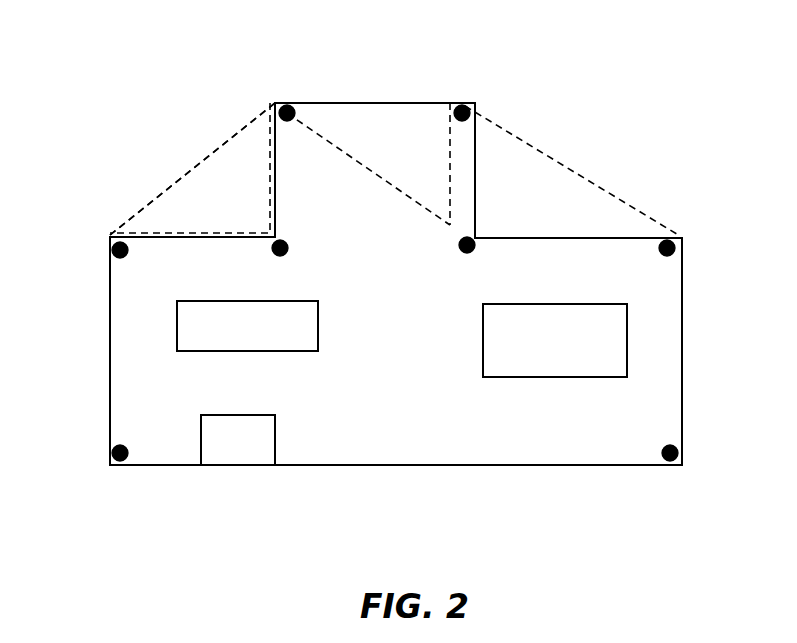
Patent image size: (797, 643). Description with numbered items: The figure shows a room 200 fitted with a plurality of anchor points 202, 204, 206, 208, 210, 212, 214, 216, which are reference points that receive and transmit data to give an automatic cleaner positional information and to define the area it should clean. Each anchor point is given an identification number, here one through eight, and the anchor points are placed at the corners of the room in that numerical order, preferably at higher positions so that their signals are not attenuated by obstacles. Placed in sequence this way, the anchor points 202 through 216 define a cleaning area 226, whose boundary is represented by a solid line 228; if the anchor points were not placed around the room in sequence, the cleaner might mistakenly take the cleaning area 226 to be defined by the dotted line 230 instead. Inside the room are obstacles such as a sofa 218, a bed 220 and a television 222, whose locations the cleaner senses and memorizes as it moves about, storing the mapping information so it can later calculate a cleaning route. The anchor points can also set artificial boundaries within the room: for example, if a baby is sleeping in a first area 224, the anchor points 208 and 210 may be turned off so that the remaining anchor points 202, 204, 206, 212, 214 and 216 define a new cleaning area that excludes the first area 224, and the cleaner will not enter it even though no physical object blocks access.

The room 200 is at (611, 72).
The anchor point 202 is at (112, 463).
The anchor point 204 is at (117, 258).
The anchor point 206 is at (285, 240).
The anchor point 208 is at (285, 103).
The anchor point 210 is at (467, 103).
The anchor point 212 is at (463, 252).
The anchor point 214 is at (670, 253).
The anchor point 216 is at (675, 465).
The sofa 218 is at (318, 330).
The bed 220 is at (483, 350).
The television 222 is at (275, 430).
The first area 224 is at (383, 122).
The cleaning area 226 is at (370, 465).
The solid line 228 is at (396, 494).
The dotted line 230 is at (210, 153).